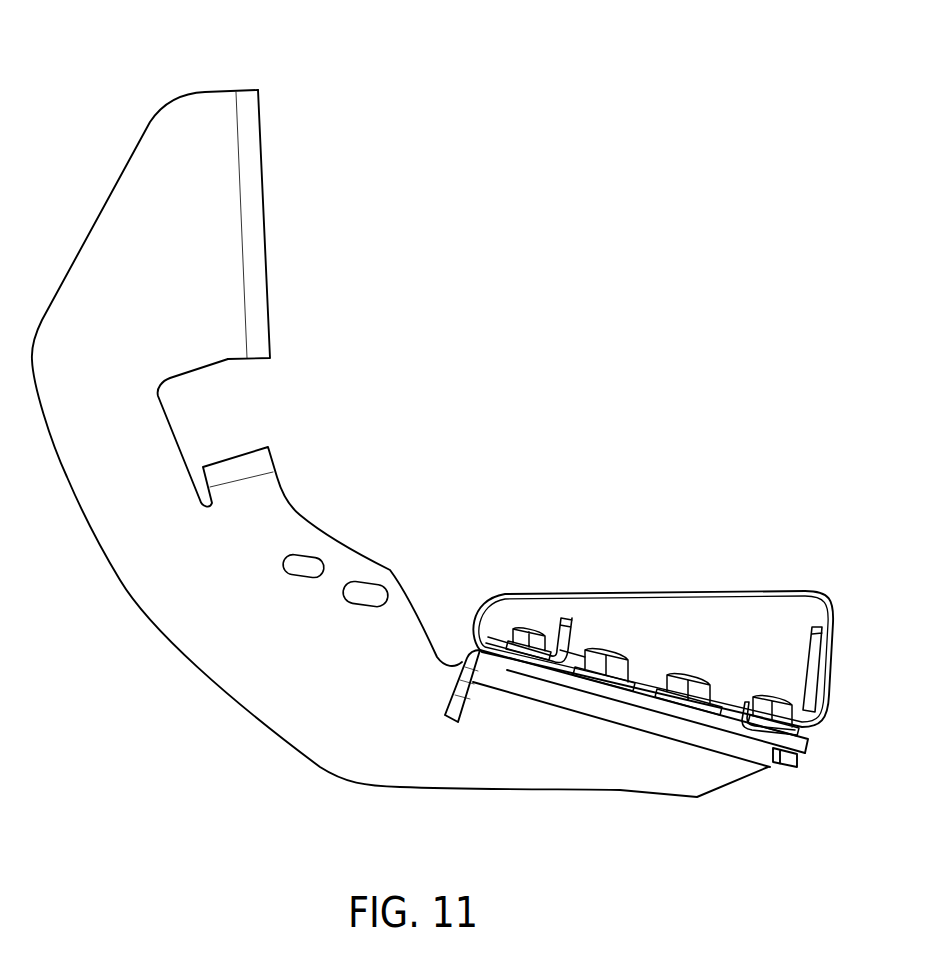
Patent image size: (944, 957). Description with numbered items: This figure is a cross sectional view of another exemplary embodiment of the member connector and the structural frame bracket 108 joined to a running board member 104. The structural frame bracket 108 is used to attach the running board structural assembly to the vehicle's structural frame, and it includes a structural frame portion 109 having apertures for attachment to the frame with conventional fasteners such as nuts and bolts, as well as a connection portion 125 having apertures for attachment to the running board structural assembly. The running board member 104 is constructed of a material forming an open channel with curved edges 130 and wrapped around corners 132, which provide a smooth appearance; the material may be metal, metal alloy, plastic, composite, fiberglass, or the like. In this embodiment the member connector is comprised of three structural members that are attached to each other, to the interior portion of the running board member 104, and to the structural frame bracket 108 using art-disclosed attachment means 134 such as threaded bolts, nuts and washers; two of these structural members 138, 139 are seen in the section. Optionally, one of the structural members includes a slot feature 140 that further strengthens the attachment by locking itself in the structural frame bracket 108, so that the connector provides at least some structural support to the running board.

The running board member 104 is at (737, 588).
The structural frame bracket 108 is at (113, 517).
The structural frame portion 109 is at (203, 130).
The connection portion 125 is at (667, 732).
The curved edges 130 is at (480, 603).
The wrapped around corners 132 is at (577, 653).
The attachment means 134 is at (530, 627).
The structural member 138 is at (813, 652).
The structural member 139 is at (570, 630).
The slot feature 140 is at (467, 648).